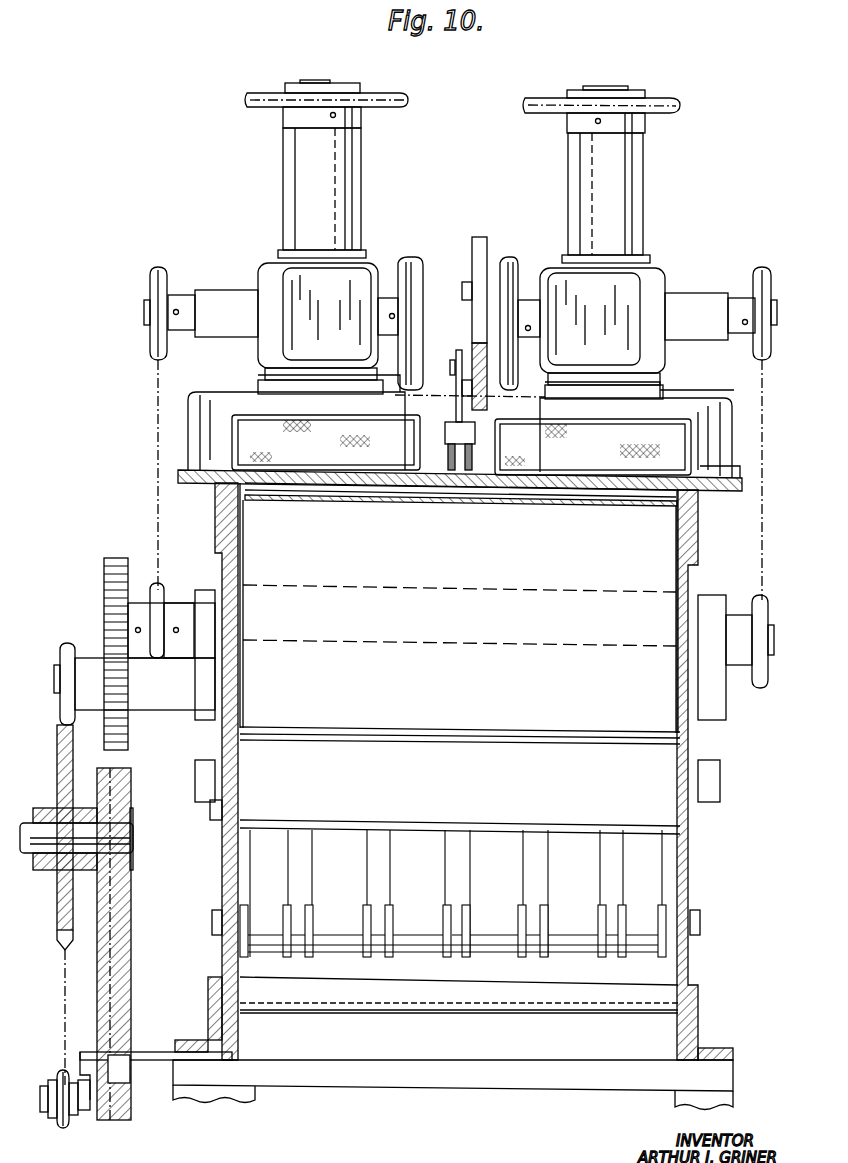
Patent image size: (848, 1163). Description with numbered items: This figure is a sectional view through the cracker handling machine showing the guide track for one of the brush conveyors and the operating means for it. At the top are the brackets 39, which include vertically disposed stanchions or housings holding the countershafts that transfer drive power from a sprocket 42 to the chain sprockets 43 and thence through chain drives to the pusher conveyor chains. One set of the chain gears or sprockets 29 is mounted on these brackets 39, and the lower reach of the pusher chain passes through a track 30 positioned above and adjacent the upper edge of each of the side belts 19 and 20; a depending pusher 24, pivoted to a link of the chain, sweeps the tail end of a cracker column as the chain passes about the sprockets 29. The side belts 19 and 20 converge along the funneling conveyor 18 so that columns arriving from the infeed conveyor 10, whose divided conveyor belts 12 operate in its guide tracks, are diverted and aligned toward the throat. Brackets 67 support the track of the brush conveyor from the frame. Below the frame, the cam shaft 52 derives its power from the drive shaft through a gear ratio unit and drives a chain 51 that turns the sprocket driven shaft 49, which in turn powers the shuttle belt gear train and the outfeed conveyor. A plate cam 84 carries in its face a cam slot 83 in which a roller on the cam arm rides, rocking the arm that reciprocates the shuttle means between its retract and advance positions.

The infeed conveyor 10 is at (468, 787).
The divided conveyor belts 12 is at (405, 950).
The funneling conveyor 18 is at (488, 486).
The side belt 19 is at (600, 456).
The side belt 20 is at (325, 454).
The depending pusher 24 is at (448, 420).
The sprockets 29 is at (505, 262).
The track 30 is at (472, 348).
The brackets 39 is at (283, 176).
The sprocket 42 is at (160, 265).
The chain sprockets 43 is at (383, 110).
The sprocket driven shaft 49 is at (62, 1130).
The chain 51 is at (62, 985).
The cam shaft 52 is at (135, 838).
The brackets 67 is at (528, 410).
The cam slot 83 is at (125, 1075).
The plate cam 84 is at (132, 896).